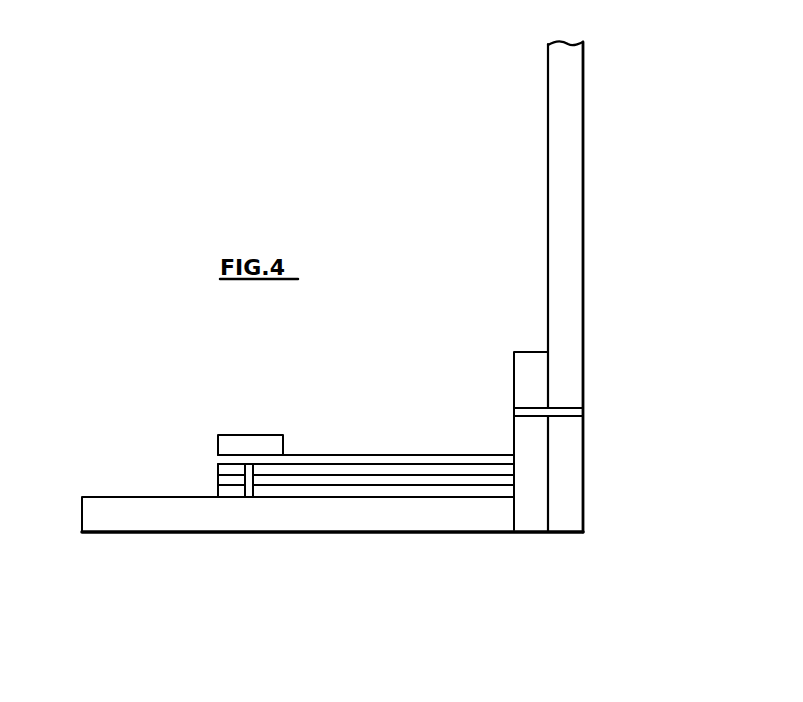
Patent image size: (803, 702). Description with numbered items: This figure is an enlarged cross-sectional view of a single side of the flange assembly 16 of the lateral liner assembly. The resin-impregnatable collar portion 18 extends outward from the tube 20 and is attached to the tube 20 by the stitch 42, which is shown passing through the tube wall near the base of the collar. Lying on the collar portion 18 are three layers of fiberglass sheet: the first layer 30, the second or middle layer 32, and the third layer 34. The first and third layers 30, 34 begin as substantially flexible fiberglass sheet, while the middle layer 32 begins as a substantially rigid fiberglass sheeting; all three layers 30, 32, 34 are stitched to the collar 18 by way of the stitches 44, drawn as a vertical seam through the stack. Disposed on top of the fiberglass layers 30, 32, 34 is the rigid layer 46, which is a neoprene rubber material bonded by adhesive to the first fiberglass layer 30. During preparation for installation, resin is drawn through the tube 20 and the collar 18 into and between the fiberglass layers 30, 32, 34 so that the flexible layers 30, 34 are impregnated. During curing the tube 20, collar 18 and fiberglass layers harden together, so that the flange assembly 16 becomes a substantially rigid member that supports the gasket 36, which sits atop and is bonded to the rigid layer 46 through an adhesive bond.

The flange assembly 16 is at (287, 538).
The resin-impregnatable collar portion 18 is at (124, 513).
The tube 20 is at (563, 262).
The first layer of fiberglass sheet 30 is at (218, 467).
The second layer of fiberglass sheet 32 is at (218, 478).
The third layer of fiberglass sheet 34 is at (218, 492).
The gasket 36 is at (283, 448).
The stitch 42 is at (565, 408).
The stitches 44 is at (247, 497).
The rigid layer 46 is at (373, 455).